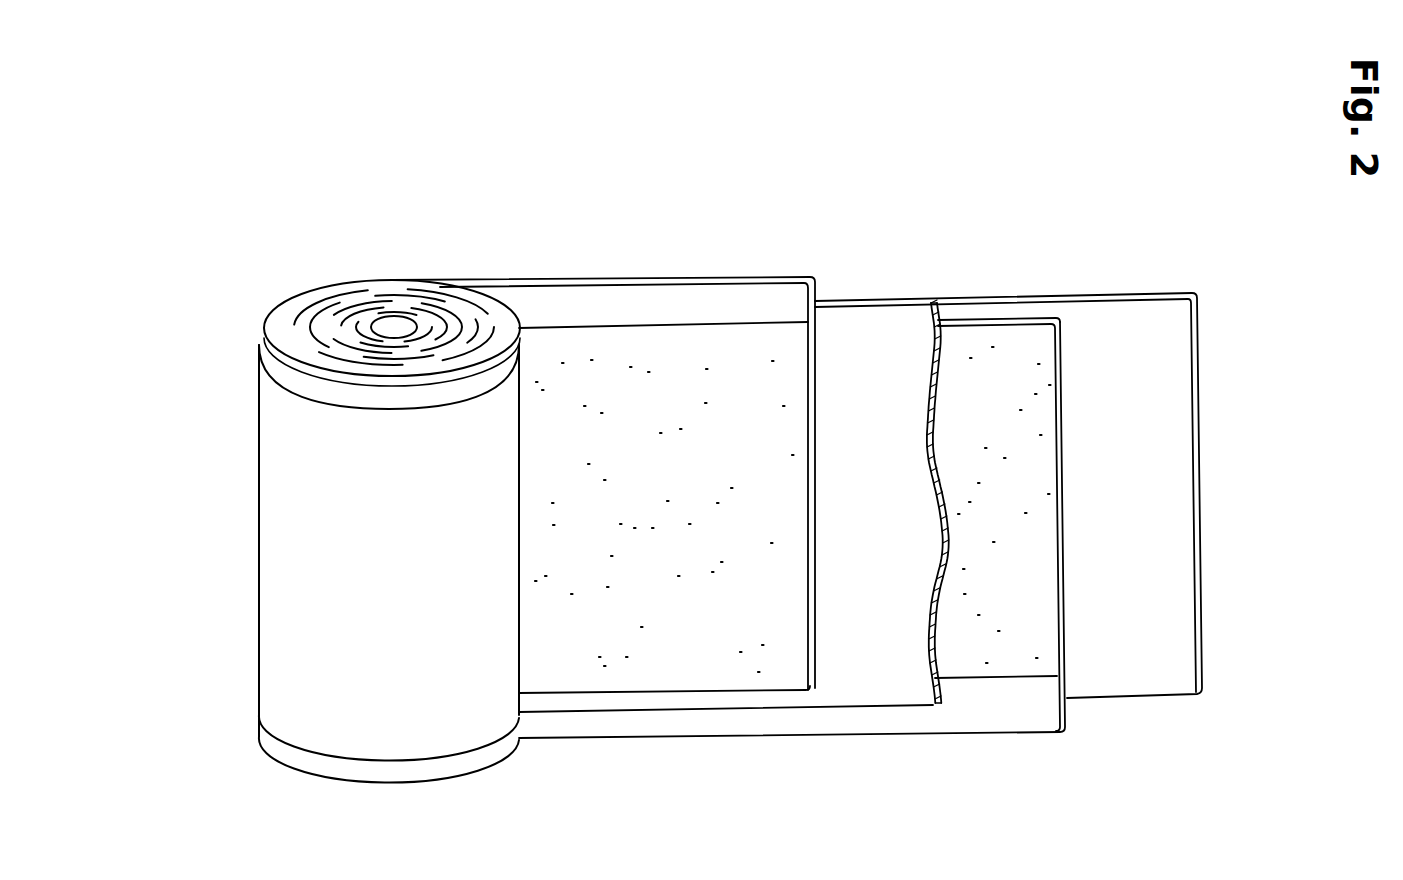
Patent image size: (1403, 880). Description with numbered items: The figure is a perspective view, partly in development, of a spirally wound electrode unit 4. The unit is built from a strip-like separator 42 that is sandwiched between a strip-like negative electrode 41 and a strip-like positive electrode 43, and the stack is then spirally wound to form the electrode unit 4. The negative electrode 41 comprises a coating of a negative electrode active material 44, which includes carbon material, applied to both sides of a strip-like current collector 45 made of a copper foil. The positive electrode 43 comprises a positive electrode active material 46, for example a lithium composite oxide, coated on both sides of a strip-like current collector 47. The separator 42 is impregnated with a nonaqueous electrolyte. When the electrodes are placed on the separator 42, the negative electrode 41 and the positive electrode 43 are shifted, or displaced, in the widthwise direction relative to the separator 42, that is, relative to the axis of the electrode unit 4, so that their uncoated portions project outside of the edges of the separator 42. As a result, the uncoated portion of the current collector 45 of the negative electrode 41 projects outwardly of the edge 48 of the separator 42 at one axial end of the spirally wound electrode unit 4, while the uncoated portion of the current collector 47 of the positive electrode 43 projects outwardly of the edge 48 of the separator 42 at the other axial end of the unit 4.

The spirally wound electrode unit 4 is at (273, 551).
The negative electrode 41 is at (1022, 352).
The separator 42 is at (898, 335).
The positive electrode 43 is at (798, 357).
The negative electrode active material 44 is at (1018, 642).
The current collector 45 is at (1007, 700).
The positive electrode active material 46 is at (700, 677).
The current collector 47 is at (754, 302).
The edge 48 is at (672, 279).